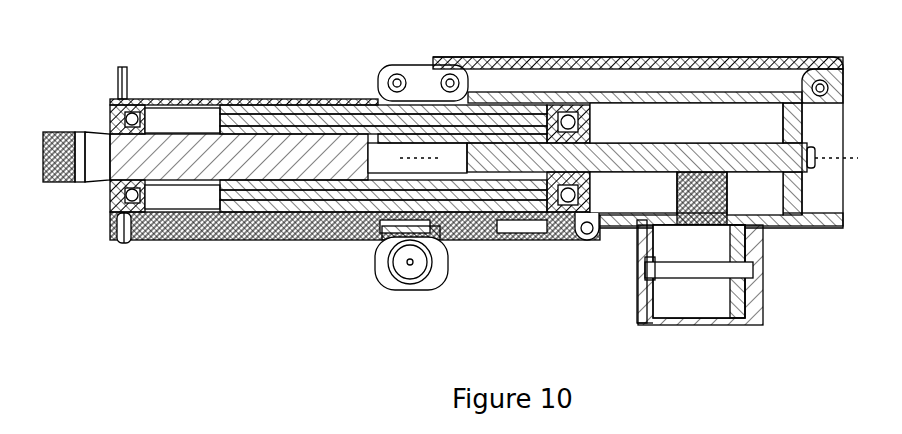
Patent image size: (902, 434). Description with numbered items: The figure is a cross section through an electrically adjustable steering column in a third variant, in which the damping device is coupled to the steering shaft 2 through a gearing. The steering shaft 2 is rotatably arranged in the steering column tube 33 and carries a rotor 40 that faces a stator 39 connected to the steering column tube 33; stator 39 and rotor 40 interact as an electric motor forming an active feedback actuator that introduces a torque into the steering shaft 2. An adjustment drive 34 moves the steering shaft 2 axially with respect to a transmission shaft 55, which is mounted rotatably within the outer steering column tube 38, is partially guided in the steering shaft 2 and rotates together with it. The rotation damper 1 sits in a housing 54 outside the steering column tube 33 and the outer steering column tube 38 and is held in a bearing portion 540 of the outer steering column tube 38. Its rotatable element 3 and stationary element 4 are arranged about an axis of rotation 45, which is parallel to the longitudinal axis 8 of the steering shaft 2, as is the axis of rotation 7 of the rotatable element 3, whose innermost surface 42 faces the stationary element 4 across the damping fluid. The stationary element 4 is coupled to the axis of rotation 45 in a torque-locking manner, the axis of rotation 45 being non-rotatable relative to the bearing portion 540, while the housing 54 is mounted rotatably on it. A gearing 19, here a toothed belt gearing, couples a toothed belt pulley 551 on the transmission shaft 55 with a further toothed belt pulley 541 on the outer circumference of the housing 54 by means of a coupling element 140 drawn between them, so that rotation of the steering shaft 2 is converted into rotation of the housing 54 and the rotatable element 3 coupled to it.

The longitudinal axis 8 is at (37, 155).
The steering shaft 2 is at (170, 130).
The steering column tube 33 is at (283, 108).
The stator 39 is at (318, 118).
The rotor 40 is at (352, 128).
The outer steering column tube 38 is at (483, 65).
The coupling 140 is at (690, 172).
The transmission shaft 55 is at (757, 150).
The innermost surface 42 is at (800, 135).
The toothed belt pulley 551 is at (800, 177).
The gearing 19 is at (732, 202).
The further toothed belt pulley 541 is at (601, 229).
The stationary element 4 is at (637, 252).
The axis of rotation 7 is at (640, 270).
The bearing portion 540 is at (638, 296).
The housing 54 is at (763, 232).
The axis of rotation 45 is at (763, 253).
The rotation damper 1 is at (763, 297).
The rotatable element 3 is at (763, 310).
The adjustment drive 34 is at (457, 272).